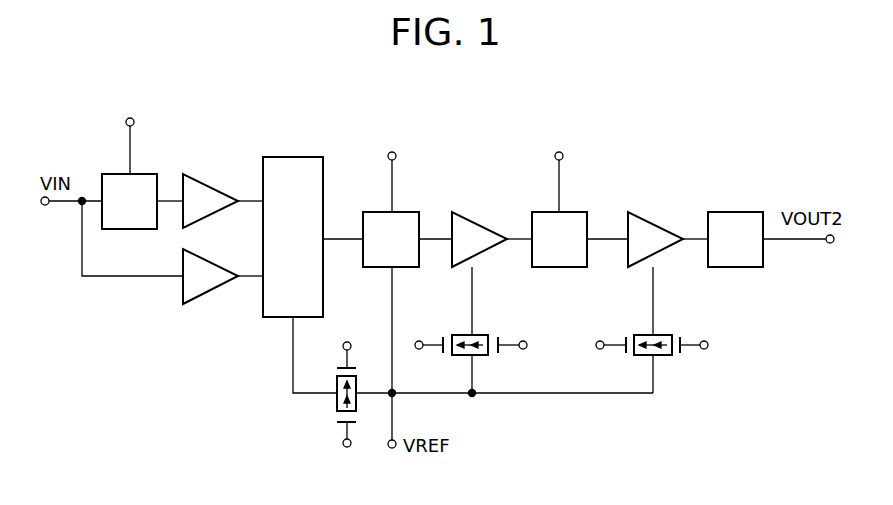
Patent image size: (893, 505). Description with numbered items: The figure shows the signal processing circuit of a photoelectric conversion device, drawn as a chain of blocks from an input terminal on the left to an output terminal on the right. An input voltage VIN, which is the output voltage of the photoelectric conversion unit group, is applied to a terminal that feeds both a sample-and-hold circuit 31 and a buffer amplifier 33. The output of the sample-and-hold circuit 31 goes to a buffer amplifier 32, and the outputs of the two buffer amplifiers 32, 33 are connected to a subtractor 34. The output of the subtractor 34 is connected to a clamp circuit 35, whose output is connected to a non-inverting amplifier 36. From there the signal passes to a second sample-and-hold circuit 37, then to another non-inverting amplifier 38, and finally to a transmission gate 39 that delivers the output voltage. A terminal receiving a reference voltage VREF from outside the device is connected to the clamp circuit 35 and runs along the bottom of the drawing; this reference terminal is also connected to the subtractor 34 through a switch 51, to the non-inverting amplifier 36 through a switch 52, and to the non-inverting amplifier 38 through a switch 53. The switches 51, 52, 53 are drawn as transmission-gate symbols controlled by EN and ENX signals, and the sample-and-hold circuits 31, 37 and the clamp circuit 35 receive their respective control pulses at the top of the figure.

The sample-and-hold circuit 31 is at (143, 174).
The buffer amplifier 32 is at (205, 180).
The buffer amplifier 33 is at (212, 292).
The subtractor 34 is at (283, 157).
The clamp circuit 35 is at (408, 212).
The non-inverting amplifier 36 is at (470, 222).
The sample-and-hold circuit 37 is at (576, 212).
The non-inverting amplifier 38 is at (648, 220).
The transmission gate 39 is at (732, 212).
The switch 51 is at (337, 398).
The switch 52 is at (477, 356).
The switch 53 is at (645, 357).